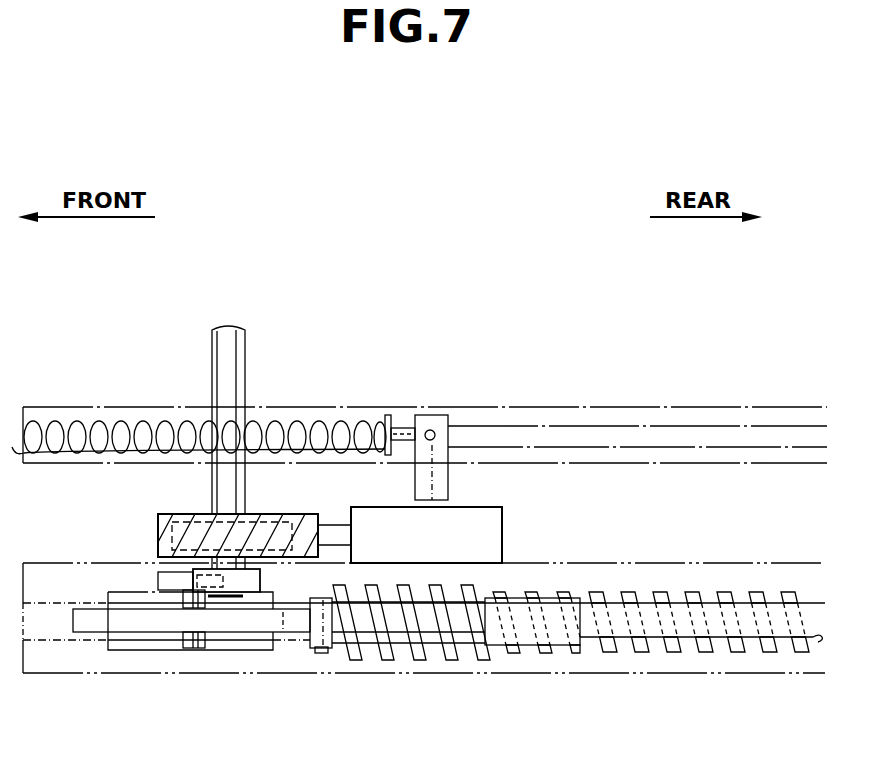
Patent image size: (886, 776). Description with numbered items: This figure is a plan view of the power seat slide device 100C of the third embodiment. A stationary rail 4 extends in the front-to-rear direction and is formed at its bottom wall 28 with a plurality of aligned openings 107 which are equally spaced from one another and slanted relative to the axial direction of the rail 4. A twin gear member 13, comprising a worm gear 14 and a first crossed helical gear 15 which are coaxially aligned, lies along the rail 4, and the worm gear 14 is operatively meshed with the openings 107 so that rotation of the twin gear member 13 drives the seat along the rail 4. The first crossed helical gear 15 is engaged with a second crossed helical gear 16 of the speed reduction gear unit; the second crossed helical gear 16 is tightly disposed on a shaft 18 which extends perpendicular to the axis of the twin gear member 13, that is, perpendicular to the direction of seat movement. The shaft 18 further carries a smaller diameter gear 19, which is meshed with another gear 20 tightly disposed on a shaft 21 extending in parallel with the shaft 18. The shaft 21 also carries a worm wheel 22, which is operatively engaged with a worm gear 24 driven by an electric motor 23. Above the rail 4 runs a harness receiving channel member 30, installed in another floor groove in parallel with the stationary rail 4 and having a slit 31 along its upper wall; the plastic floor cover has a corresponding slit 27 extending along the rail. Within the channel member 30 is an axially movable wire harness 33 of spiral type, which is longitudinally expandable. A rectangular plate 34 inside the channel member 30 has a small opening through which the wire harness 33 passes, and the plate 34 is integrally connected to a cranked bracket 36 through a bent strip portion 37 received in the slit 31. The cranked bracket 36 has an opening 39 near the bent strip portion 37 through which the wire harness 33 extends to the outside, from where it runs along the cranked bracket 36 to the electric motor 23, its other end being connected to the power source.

The power seat slide device 100C is at (445, 218).
The stationary rail 4 is at (635, 680).
The twin gear member 13 is at (322, 666).
The worm gear 14 is at (443, 661).
The first crossed helical gear 15 is at (168, 651).
The second crossed helical gear 16 is at (73, 618).
The shaft 18 is at (202, 650).
The smaller diameter gear 19 is at (158, 573).
The gear 20 is at (265, 593).
The shaft 21 is at (240, 352).
The worm wheel 22 is at (270, 517).
The electric motor 23 is at (494, 518).
The worm gear 24 is at (157, 517).
The slit 27 is at (822, 640).
The bottom wall 28 is at (690, 660).
The harness receiving channel member 30 is at (553, 404).
The slit 31 is at (690, 424).
The wire harness 33 is at (126, 418).
The rectangular plate 34 is at (380, 416).
The cranked bracket 36 is at (440, 414).
The bent strip portion 37 is at (405, 427).
The opening 39 is at (452, 432).
The openings 107 is at (782, 592).